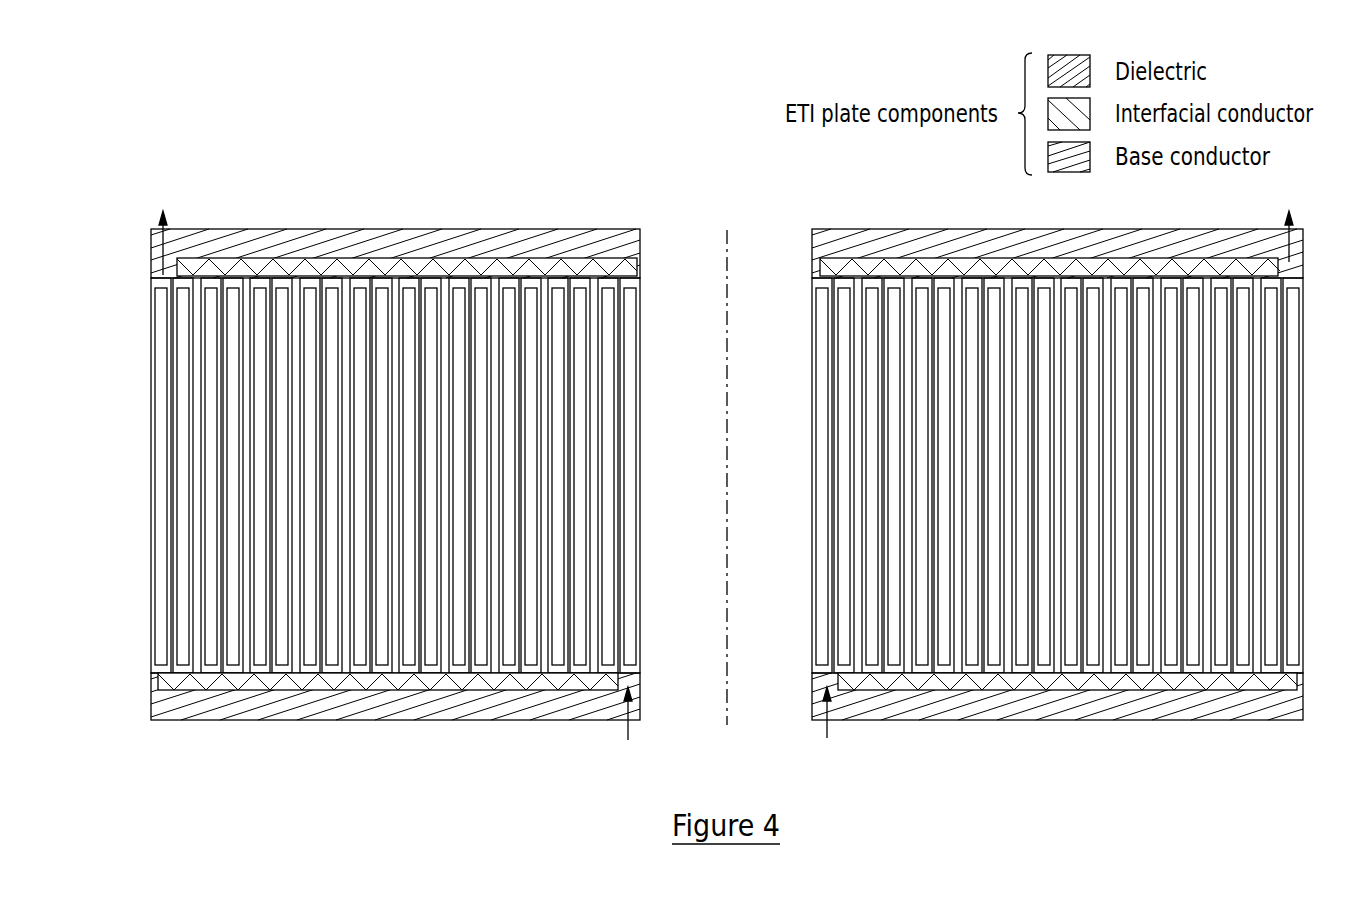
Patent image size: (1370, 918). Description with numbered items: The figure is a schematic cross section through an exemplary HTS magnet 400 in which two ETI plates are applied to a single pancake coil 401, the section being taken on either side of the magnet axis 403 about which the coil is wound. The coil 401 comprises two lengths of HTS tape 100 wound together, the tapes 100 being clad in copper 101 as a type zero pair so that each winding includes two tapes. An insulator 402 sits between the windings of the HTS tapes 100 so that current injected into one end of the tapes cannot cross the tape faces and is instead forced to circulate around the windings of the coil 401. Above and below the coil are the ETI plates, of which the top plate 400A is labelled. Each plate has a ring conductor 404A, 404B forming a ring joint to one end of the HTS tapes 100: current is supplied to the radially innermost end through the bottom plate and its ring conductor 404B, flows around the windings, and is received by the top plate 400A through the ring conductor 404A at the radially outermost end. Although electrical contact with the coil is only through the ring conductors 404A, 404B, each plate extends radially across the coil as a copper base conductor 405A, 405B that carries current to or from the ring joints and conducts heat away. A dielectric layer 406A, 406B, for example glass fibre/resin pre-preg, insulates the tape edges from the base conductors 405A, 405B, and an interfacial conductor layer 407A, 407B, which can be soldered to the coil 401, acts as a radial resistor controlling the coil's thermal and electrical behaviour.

The magnet 400 is at (680, 441).
The ETI plate 400A is at (395, 196).
The pancake coil 401 is at (328, 296).
The insulator 402 is at (197, 443).
The magnet axis 403 is at (727, 448).
The ring conductor 404A is at (132, 234).
The ring conductor 404B is at (812, 707).
The base conductor 405A is at (362, 237).
The base conductor 405B is at (955, 705).
The dielectric layer 406A is at (417, 265).
The dielectric layer 406B is at (1050, 690).
The interfacial conductor layer 407A is at (530, 270).
The interfacial conductor layer 407B is at (1160, 673).
The HTS tape 100 is at (158, 355).
The copper 101 is at (152, 440).